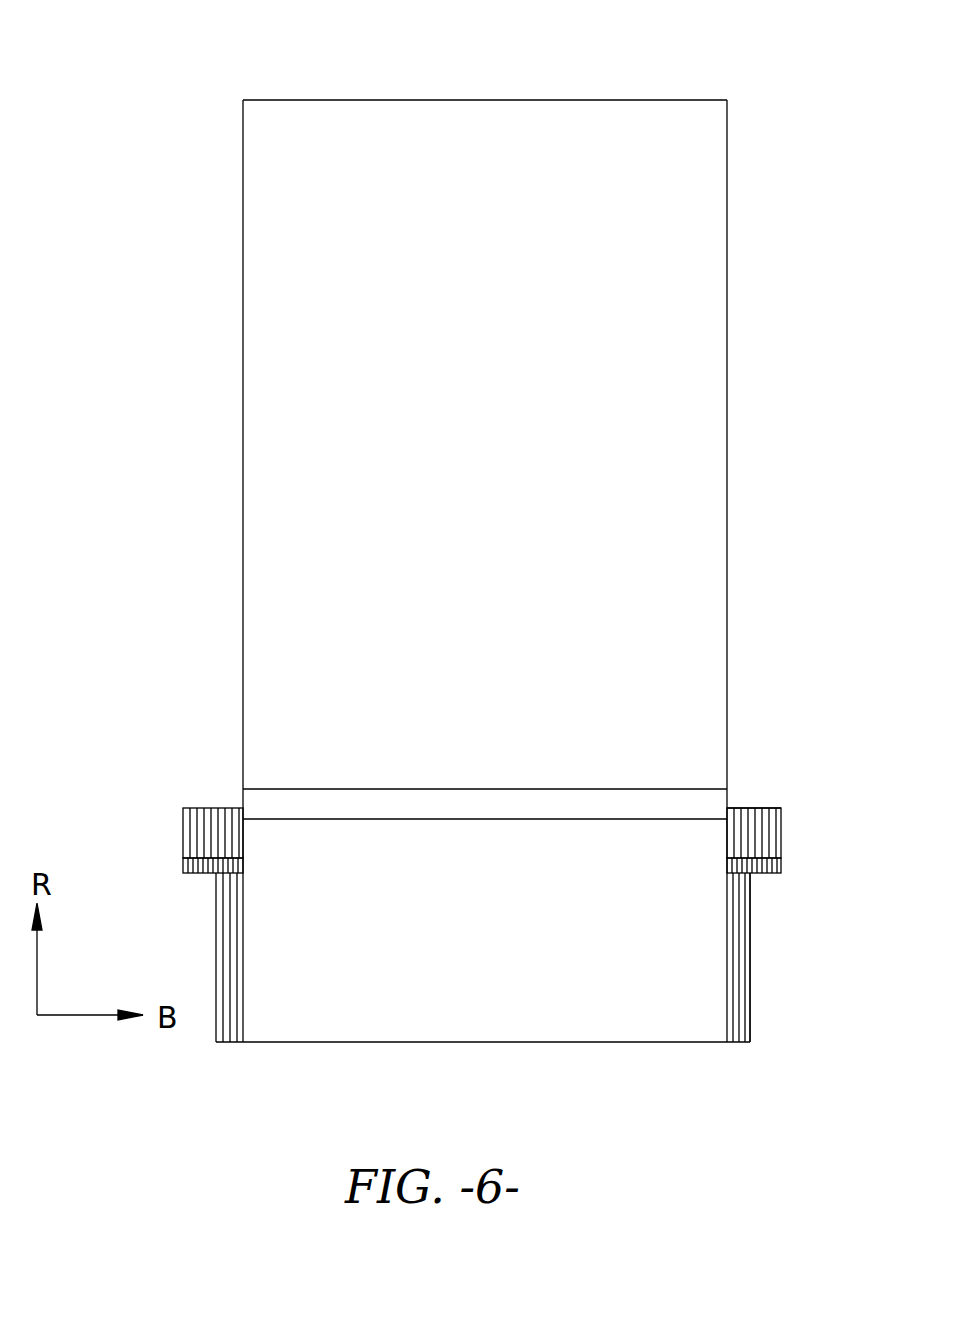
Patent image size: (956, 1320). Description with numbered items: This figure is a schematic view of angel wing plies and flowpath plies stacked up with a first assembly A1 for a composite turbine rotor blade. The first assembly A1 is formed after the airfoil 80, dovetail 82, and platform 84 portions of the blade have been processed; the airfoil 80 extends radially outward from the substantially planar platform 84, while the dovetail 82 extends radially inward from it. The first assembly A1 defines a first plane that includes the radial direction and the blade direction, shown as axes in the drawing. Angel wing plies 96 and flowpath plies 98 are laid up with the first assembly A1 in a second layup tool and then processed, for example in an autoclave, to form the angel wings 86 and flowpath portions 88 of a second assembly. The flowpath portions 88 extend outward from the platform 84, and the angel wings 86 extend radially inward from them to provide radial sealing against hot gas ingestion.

The airfoil 80 is at (700, 333).
The dovetail 82 is at (647, 1013).
The platform 84 is at (488, 800).
The angel wing 86 is at (755, 930).
The flowpath portion 88 is at (752, 808).
The angel wing plies 96 is at (215, 965).
The flowpath plies 98 is at (185, 843).
The first assembly A1 is at (570, 100).